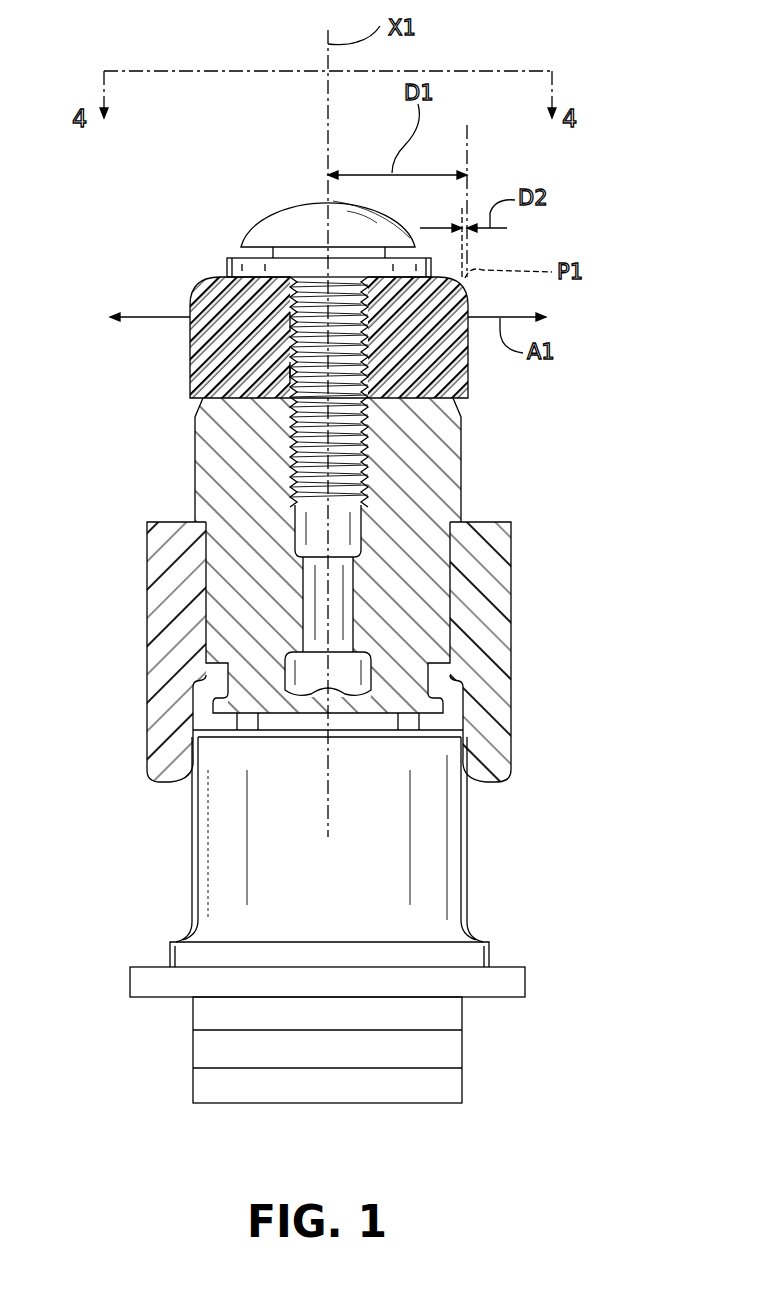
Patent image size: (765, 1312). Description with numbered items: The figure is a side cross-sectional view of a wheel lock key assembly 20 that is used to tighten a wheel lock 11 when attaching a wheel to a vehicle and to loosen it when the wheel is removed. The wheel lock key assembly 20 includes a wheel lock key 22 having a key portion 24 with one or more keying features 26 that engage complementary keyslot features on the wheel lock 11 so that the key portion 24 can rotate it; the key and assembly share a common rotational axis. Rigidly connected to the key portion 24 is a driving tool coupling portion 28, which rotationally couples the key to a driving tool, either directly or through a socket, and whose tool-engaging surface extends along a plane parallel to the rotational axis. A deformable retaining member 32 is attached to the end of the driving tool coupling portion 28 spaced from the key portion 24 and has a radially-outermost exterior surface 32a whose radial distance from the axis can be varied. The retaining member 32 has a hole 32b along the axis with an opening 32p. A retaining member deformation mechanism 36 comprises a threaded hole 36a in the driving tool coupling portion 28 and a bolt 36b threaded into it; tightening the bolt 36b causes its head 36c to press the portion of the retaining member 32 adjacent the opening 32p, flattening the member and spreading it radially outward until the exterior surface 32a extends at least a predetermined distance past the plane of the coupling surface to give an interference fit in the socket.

The wheel lock 11 is at (392, 848).
The wheel lock key assembly 20 is at (112, 197).
The wheel lock key 22 is at (588, 522).
The key portion 24 is at (408, 643).
The keying features 26 is at (248, 716).
The driving tool coupling portion 28 is at (195, 473).
The retaining member 32 is at (218, 277).
The radially-outermost exterior surface 32a is at (282, 370).
The hole 32b is at (287, 374).
The opening 32p is at (288, 322).
The retaining member deformation mechanism 36 is at (396, 399).
The threaded hole 36a is at (367, 477).
The bolt 36b is at (282, 212).
The head 36c is at (353, 212).